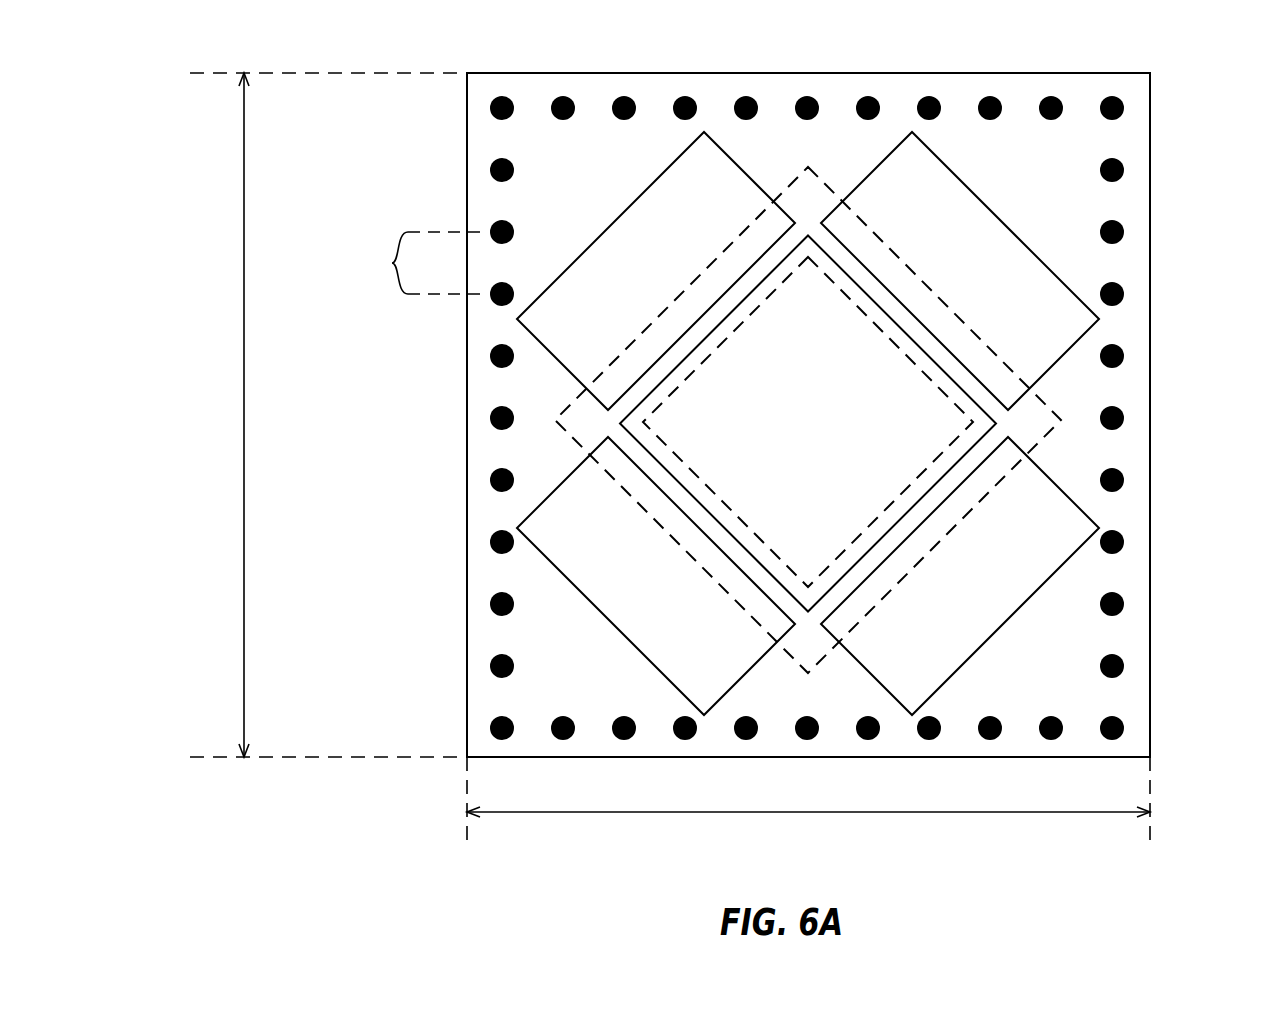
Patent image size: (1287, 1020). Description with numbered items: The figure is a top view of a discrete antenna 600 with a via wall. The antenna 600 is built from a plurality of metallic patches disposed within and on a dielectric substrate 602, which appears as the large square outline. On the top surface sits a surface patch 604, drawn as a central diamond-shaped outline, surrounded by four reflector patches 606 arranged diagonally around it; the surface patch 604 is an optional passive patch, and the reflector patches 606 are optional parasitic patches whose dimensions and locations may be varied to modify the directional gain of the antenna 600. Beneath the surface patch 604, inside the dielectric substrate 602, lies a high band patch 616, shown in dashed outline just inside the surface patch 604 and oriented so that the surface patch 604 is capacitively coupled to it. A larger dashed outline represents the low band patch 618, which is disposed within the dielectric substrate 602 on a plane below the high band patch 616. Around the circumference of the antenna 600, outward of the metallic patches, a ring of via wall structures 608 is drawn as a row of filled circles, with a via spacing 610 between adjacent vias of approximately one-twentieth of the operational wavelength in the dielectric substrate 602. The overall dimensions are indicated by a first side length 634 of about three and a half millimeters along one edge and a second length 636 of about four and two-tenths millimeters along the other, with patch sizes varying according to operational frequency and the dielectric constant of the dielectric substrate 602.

The discrete antenna 600 is at (280, 56).
The dielectric substrate 602 is at (1150, 115).
The surface patch 604 is at (790, 430).
The reflector patches 606 is at (630, 279).
The via wall structures 608 is at (490, 170).
The via spacing 610 is at (392, 263).
The high band patch 616 is at (643, 422).
The low band patch 618 is at (808, 166).
The first side length 634 is at (244, 352).
The second length 636 is at (1020, 812).